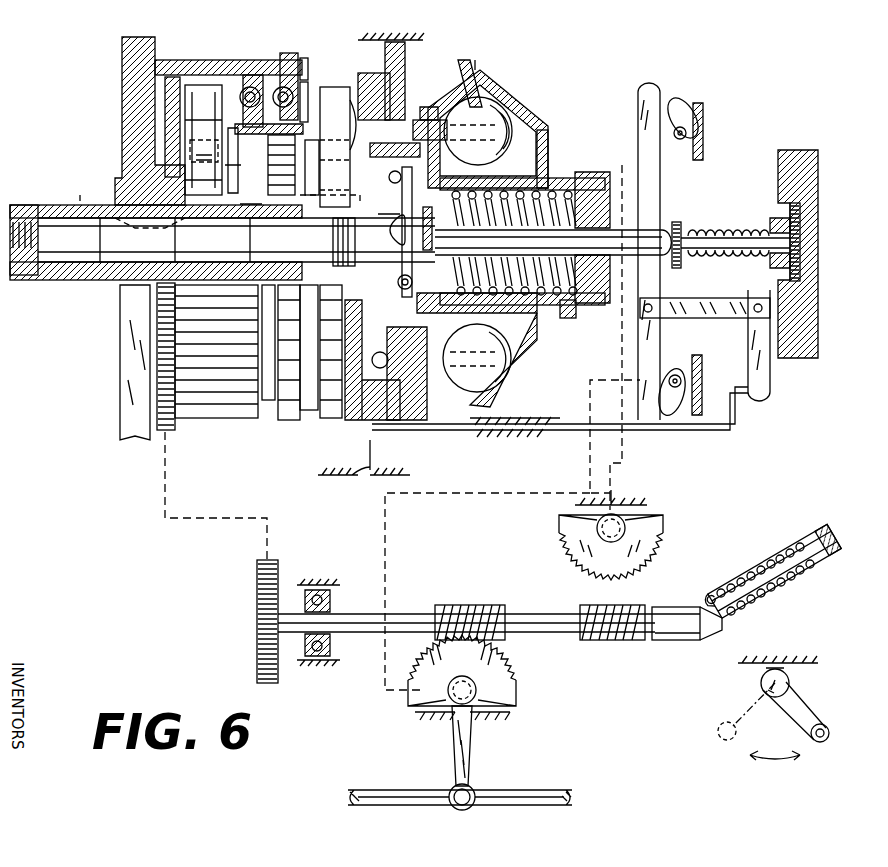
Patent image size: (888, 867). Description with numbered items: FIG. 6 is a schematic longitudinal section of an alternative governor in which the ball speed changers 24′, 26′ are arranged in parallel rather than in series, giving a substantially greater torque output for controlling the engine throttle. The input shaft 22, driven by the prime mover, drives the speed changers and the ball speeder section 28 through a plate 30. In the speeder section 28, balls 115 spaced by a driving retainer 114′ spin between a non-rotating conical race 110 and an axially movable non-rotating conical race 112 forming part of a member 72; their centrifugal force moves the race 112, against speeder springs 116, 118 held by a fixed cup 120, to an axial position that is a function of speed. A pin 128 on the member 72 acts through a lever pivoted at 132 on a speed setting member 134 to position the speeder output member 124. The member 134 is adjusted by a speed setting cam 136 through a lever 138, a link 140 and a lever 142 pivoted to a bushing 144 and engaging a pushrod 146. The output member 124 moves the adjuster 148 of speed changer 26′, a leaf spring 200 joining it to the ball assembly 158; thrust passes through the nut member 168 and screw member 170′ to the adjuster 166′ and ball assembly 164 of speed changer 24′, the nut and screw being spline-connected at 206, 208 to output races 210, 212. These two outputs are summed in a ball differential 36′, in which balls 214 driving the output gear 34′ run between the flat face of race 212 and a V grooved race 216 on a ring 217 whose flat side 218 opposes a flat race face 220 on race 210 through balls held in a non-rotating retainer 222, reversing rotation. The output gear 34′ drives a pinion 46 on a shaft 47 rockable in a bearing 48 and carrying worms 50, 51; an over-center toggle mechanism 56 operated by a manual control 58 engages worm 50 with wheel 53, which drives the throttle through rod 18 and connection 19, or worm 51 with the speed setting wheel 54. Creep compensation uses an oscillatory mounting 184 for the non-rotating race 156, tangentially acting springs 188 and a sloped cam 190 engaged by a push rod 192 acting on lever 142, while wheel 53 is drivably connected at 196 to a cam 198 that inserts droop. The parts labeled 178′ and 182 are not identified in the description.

The rod 18 is at (506, 784).
The connection 19 is at (470, 736).
The input shaft 22 is at (50, 206).
The ball speed changer 24′ is at (189, 58).
The ball speed changer 26′ is at (300, 414).
The ball speeder section 28 is at (492, 60).
The drive plate 30 is at (208, 160).
The output gear 34′ is at (188, 437).
The ball differential 36′ is at (268, 420).
The pinion 46 is at (260, 562).
The shaft 47 is at (340, 612).
The bearing 48 is at (340, 586).
The worm 50 is at (456, 609).
The worm 51 is at (602, 640).
The wheel 53 is at (518, 662).
The speed setting wheel 54 is at (666, 538).
The over-center toggle mechanism 56 is at (780, 602).
The manual control 58 is at (798, 692).
The member 72 is at (546, 144).
The non-rotating conical race 110 is at (466, 84).
The axially movable non-rotating conical race 112 is at (515, 106).
The driving retainer 114′ is at (393, 159).
The balls 115 is at (478, 131).
The speeder spring 116 is at (548, 178).
The speeder spring 118 is at (560, 192).
The fixed cup 120 is at (573, 310).
The speeder output member 124 is at (473, 362).
The pin 128 is at (400, 184).
The pivot 132 is at (435, 217).
The speed setting member 134 is at (642, 214).
The speed setting cam 136 is at (678, 108).
The lever 138 is at (662, 226).
The link 140 is at (680, 322).
The lever 142 is at (770, 386).
The bushing 144 is at (802, 272).
The pushrod 146 is at (688, 260).
The adjuster 148 is at (327, 242).
The non-rotating speed changer race 156 is at (452, 102).
The ball assembly 158 is at (338, 147).
The ball assembly 164 is at (190, 160).
The adjuster 166′ is at (198, 218).
The nut member 168 is at (275, 165).
The screw member 170′ is at (262, 218).
The housing wall 178′ is at (160, 118).
The pivot 182 is at (421, 283).
The oscillatory mounting 184 is at (365, 385).
The tangentially acting springs 188 is at (344, 462).
The sloped cam 190 is at (386, 450).
The push rod 192 is at (722, 432).
The drivable connection 196 is at (384, 526).
The cam 198 is at (689, 366).
The leaf spring 200 is at (321, 203).
The spline connection 206 is at (314, 160).
The spline connection 208 is at (234, 165).
The output race 210 is at (318, 88).
The output race 212 is at (243, 84).
The balls 214 is at (248, 64).
The V grooved race 216 is at (253, 88).
The ring 217 is at (270, 56).
The flat face 218 is at (269, 110).
The flat race face 220 is at (306, 84).
The non-rotating retainer 222 is at (302, 62).